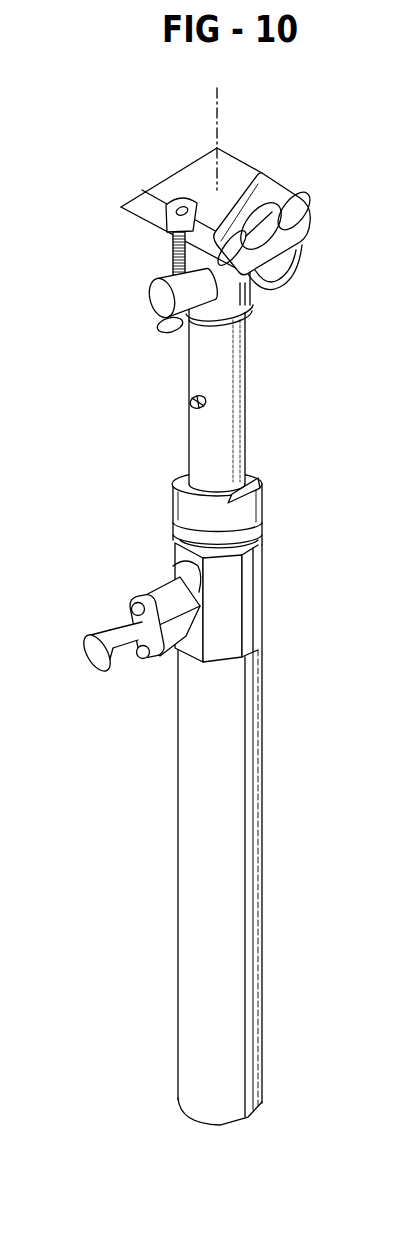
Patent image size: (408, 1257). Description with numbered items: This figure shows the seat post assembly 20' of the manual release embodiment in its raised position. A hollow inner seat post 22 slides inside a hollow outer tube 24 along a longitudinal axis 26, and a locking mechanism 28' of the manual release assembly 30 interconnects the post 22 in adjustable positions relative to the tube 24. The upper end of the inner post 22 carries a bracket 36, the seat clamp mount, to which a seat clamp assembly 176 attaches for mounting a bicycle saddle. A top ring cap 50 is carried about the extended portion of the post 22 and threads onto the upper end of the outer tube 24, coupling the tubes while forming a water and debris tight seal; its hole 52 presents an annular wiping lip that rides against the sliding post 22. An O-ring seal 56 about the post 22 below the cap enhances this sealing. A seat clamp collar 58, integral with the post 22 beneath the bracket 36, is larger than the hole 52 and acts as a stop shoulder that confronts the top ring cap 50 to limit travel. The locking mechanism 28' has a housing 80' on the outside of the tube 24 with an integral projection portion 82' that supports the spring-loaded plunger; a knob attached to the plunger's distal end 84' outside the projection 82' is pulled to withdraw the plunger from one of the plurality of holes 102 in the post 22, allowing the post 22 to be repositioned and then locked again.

The seat post assembly 20' is at (256, 229).
The inner seat post 22 is at (228, 398).
The outer tube 24 is at (260, 723).
The longitudinal axis 26 is at (222, 122).
The locking mechanism 28' is at (132, 635).
The manual release assembly 30 is at (246, 638).
The bracket 36 is at (253, 294).
The top ring cap 50 is at (262, 508).
The hole 52 is at (263, 490).
The O-ring seal 56 is at (177, 475).
The seat clamp collar 58 is at (257, 312).
The housing 80' is at (250, 615).
The projection portion 82' is at (154, 600).
The distal end of plunger 84' is at (149, 674).
The holes 102 is at (192, 403).
The seat clamp assembly 176 is at (268, 185).